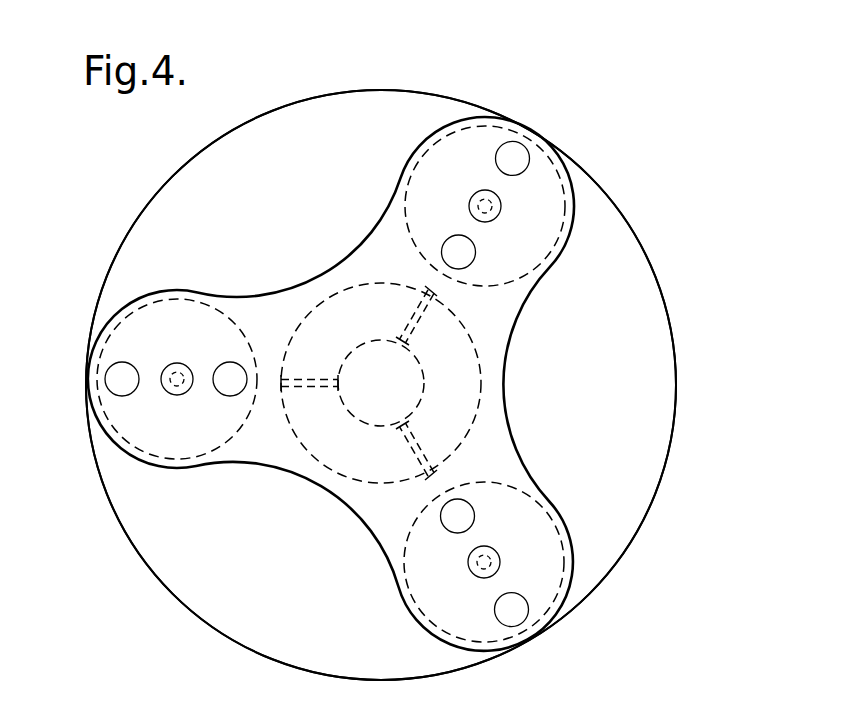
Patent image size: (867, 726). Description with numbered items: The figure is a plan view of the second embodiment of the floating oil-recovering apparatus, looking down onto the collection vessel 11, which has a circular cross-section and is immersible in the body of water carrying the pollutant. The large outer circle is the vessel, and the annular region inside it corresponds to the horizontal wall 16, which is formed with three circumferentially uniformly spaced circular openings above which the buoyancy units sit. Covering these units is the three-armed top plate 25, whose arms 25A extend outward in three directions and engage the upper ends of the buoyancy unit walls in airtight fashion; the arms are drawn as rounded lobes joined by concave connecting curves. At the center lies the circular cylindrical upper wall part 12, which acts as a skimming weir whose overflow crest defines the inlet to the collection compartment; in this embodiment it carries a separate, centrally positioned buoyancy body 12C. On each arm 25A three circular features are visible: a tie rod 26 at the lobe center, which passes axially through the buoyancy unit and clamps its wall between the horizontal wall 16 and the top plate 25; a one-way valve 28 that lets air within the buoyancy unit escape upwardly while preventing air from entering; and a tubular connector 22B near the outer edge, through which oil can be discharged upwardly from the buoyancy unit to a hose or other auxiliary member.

The collection vessel 11 is at (641, 226).
The horizontal wall 16 is at (648, 377).
The top plate 25 is at (503, 412).
The arm 25A is at (566, 236).
The upper wall part 12 is at (330, 292).
The buoyancy body 12C is at (381, 358).
The tubular connector 22B is at (518, 157).
The tie rod 26 is at (470, 203).
The one-way valve 28 is at (450, 248).